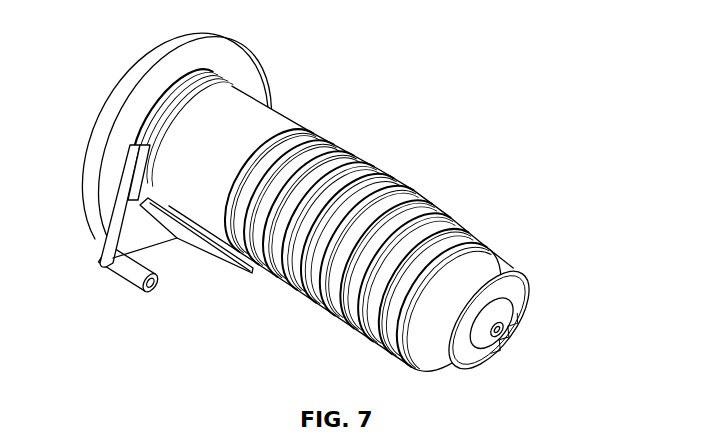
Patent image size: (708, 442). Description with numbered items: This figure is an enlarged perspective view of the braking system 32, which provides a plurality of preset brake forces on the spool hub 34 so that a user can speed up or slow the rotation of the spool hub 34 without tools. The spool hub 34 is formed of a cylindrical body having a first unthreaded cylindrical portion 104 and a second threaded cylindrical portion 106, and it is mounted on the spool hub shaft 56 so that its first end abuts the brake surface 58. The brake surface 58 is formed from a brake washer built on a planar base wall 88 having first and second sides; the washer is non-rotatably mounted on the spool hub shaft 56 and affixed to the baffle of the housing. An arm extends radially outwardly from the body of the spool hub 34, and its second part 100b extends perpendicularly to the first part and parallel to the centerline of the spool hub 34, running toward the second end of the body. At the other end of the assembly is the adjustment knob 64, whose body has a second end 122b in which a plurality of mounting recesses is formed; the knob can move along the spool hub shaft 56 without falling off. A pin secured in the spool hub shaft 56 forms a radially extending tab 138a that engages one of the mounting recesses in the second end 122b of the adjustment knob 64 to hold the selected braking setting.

The braking system 32 is at (310, 218).
The spool hub 34 is at (384, 162).
The spool hub shaft 56 is at (500, 332).
The brake surface 58 is at (91, 114).
The adjustment knob 64 is at (514, 268).
The planar base wall 88 is at (113, 170).
The second part of the arm 100b is at (128, 277).
The first unthreaded cylindrical portion 104 is at (263, 125).
The second threaded cylindrical portion 106 is at (418, 237).
The second end of the adjustment knob body 122b is at (516, 293).
The radially extending tab 138a is at (512, 318).